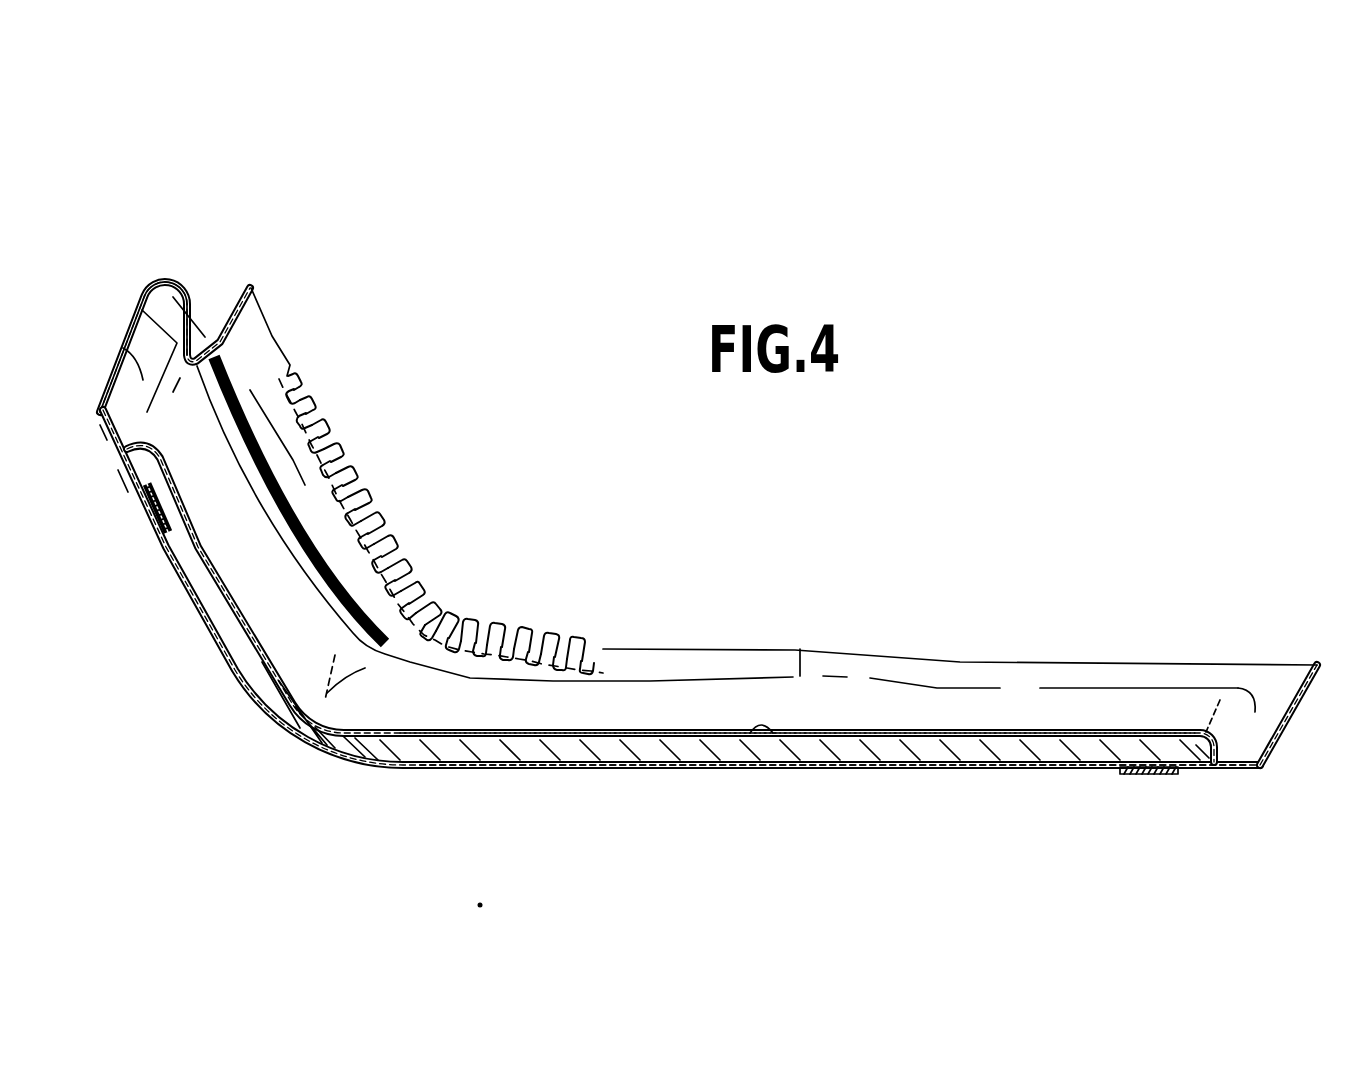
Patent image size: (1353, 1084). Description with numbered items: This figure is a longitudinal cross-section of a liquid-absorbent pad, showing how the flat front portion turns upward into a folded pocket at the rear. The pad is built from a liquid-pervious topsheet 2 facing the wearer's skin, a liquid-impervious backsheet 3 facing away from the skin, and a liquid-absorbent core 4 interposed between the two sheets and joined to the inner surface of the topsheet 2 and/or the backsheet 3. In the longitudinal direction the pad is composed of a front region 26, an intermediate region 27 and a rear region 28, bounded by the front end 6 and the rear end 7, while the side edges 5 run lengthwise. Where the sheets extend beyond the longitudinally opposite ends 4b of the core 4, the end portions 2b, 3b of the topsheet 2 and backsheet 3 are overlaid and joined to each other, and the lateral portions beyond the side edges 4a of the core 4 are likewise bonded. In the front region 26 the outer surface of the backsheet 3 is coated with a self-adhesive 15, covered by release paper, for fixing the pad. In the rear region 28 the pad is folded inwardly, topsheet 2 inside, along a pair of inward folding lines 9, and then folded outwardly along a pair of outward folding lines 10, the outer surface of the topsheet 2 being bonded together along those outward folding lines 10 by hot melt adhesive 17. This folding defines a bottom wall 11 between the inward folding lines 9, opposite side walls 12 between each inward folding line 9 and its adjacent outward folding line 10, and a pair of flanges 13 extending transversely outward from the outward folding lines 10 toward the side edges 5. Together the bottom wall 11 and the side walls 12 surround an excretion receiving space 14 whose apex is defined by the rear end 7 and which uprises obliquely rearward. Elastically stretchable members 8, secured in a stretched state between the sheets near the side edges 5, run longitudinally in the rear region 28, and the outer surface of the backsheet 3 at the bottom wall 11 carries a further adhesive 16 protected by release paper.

The liquid-pervious topsheet 2 is at (773, 740).
The end portion of the topsheet 2b is at (122, 352).
The liquid-impervious backsheet 3 is at (850, 767).
The end portion of the backsheet 3b is at (100, 435).
The liquid-absorbent core 4 is at (678, 757).
The side edges of the core 4a is at (801, 652).
The longitudinally opposite ends of the core 4b is at (122, 478).
The side edges 5 is at (917, 653).
The front end 6 is at (1290, 713).
The rear end 7 is at (98, 392).
The elastically stretchable members 8 is at (445, 625).
The inward folding lines 9 is at (172, 282).
The outward folding lines 10 is at (245, 374).
The bottom wall 11 is at (218, 640).
The side walls 12 is at (200, 335).
The flanges 13 is at (257, 341).
The excretion receiving space 14 is at (134, 312).
The self-adhesive 15 is at (1152, 774).
The adhesive 16 is at (140, 520).
The hot melt adhesive 17 is at (348, 478).
The front region 26 is at (1087, 768).
The intermediate region 27 is at (710, 763).
The rear region 28 is at (187, 587).